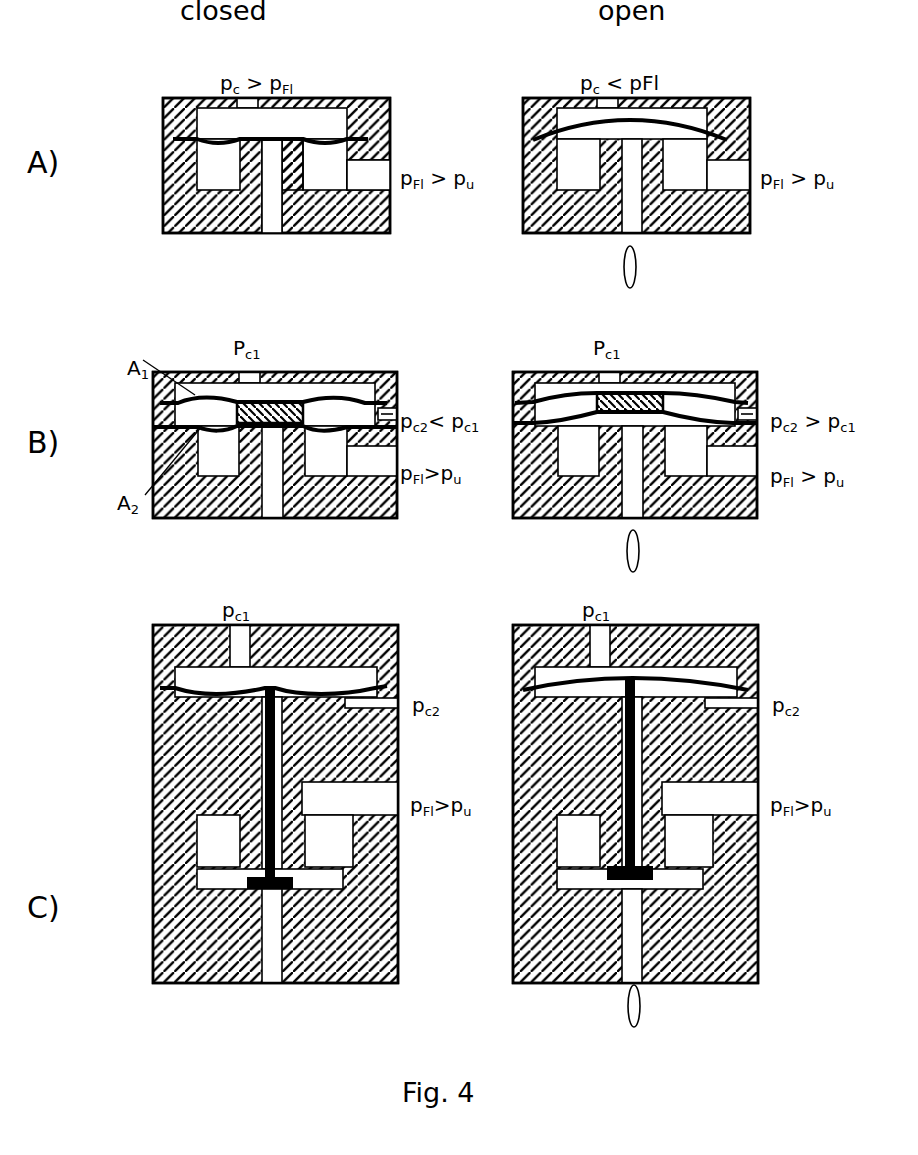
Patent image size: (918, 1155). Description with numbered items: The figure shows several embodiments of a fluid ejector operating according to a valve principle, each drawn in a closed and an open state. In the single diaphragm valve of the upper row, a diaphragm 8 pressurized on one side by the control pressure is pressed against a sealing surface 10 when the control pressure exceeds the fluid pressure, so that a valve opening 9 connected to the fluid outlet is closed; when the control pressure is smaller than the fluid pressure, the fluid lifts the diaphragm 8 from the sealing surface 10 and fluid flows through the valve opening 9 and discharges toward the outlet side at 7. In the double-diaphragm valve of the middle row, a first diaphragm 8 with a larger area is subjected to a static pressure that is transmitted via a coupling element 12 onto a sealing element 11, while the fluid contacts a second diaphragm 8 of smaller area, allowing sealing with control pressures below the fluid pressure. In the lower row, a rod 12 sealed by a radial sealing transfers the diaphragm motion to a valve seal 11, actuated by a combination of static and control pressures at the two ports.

The fluid chamber / outlet pocket 7 is at (365, 172).
The diaphragm 8 is at (297, 138).
The valve opening 9 is at (270, 160).
The sealing surface 10 is at (293, 147).
The sealing element 11 is at (247, 428).
The coupling element 12 is at (278, 428).